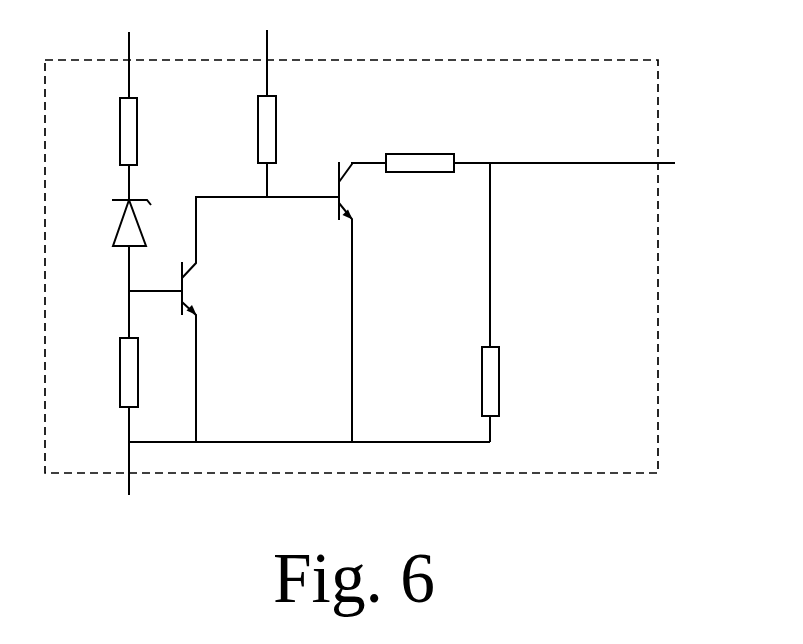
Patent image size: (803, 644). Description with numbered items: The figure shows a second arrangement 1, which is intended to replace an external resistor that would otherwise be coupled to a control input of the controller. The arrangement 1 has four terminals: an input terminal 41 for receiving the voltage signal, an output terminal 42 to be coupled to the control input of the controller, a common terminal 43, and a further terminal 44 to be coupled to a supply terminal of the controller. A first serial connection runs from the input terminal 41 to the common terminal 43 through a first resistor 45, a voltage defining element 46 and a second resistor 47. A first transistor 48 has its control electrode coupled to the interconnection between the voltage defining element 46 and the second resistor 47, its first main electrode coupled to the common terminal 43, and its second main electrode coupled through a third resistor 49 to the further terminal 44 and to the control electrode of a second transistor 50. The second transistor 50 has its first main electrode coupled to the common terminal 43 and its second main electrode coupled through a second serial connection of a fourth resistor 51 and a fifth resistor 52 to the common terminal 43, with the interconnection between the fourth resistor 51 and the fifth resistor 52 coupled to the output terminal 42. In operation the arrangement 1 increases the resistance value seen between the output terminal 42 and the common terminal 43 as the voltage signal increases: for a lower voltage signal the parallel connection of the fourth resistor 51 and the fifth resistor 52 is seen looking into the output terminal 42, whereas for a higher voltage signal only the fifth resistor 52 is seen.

The arrangement 1 is at (635, 475).
The input terminal 41 is at (128, 49).
The output terminal 42 is at (581, 164).
The common terminal 43 is at (128, 487).
The further terminal 44 is at (266, 48).
The first resistor 45 is at (105, 149).
The voltage defining element 46 is at (123, 269).
The second resistor 47 is at (282, 390).
The first transistor 48 is at (260, 319).
The third resistor 49 is at (242, 146).
The second transistor 50 is at (342, 302).
The fourth resistor 51 is at (420, 140).
The fifth resistor 52 is at (513, 302).